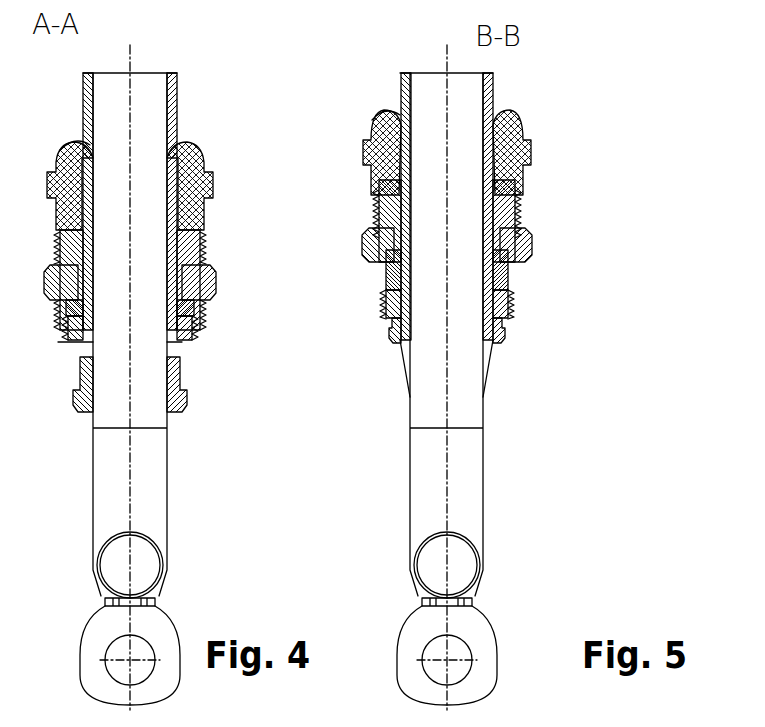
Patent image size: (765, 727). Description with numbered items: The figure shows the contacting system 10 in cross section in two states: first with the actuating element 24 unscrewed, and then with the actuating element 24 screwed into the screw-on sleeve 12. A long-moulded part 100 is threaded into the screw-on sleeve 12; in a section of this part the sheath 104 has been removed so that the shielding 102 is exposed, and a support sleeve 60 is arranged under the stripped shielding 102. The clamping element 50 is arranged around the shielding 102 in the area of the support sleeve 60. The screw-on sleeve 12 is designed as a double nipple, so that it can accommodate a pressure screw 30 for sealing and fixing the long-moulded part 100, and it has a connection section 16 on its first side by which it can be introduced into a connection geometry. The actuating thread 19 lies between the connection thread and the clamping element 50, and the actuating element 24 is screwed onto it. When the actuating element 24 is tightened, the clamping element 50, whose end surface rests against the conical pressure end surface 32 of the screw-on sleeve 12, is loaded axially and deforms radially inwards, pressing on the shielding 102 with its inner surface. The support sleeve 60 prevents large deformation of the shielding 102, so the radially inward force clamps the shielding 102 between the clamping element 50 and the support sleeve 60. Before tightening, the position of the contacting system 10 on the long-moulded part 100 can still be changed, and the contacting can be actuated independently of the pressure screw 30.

In FIG. 4, the contacting system 10 is at (242, 158).
In FIG. 5, the contacting system 10 is at (583, 135).
In FIG. 4, the screw-on sleeve 12 is at (203, 253).
In FIG. 5, the screw-on sleeve 12 is at (532, 240).
In FIG. 5, the connection section 16 is at (395, 281).
In FIG. 4, the actuating thread 19 is at (177, 343).
In FIG. 4, the actuating element 24 is at (190, 393).
In FIG. 5, the actuating element 24 is at (388, 335).
In FIG. 5, the pressure screw 30 is at (373, 128).
In FIG. 4, the pressure end surface 32 is at (140, 282).
In FIG. 4, the clamping element 50 is at (187, 305).
In FIG. 5, the clamping element 50 is at (502, 273).
In FIG. 4, the support sleeve 60 is at (180, 313).
In FIG. 5, the support sleeve 60 is at (495, 307).
In FIG. 4, the long-moulded part 100 is at (178, 73).
In FIG. 5, the long-moulded part 100 is at (495, 73).
In FIG. 4, the shielding 102 is at (170, 120).
In FIG. 5, the shielding 102 is at (485, 120).
In FIG. 4, the sheath 104 is at (177, 100).
In FIG. 5, the sheath 104 is at (493, 98).